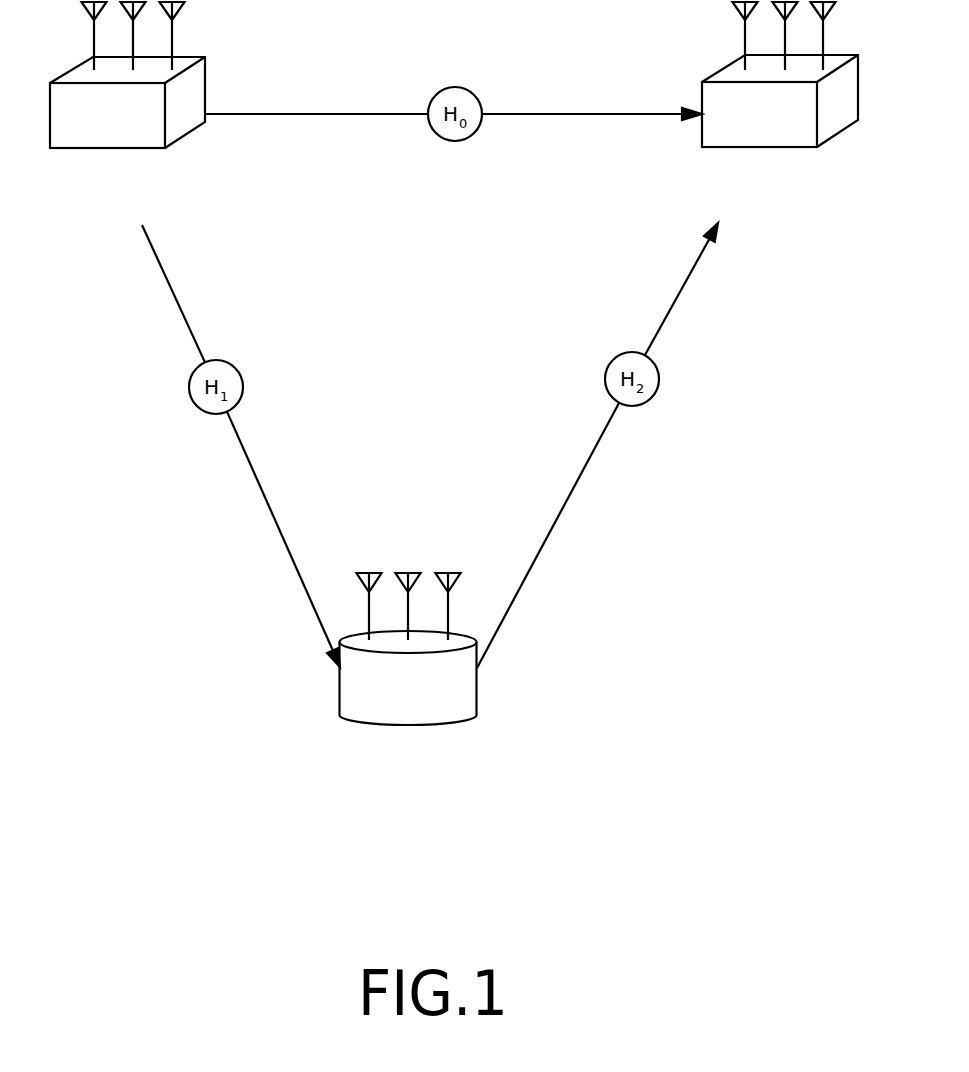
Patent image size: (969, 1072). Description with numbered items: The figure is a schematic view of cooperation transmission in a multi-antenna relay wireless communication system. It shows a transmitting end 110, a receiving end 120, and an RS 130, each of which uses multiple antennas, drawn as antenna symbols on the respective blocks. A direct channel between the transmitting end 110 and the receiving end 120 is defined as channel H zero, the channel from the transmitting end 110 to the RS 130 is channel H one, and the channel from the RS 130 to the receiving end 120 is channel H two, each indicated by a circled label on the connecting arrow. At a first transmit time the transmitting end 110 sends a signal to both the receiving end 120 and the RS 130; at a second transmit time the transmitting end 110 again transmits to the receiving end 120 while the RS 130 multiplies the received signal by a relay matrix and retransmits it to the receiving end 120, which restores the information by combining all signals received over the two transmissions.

The transmitting end 110 is at (132, 110).
The receiving end 120 is at (773, 112).
The RS 130 is at (408, 681).